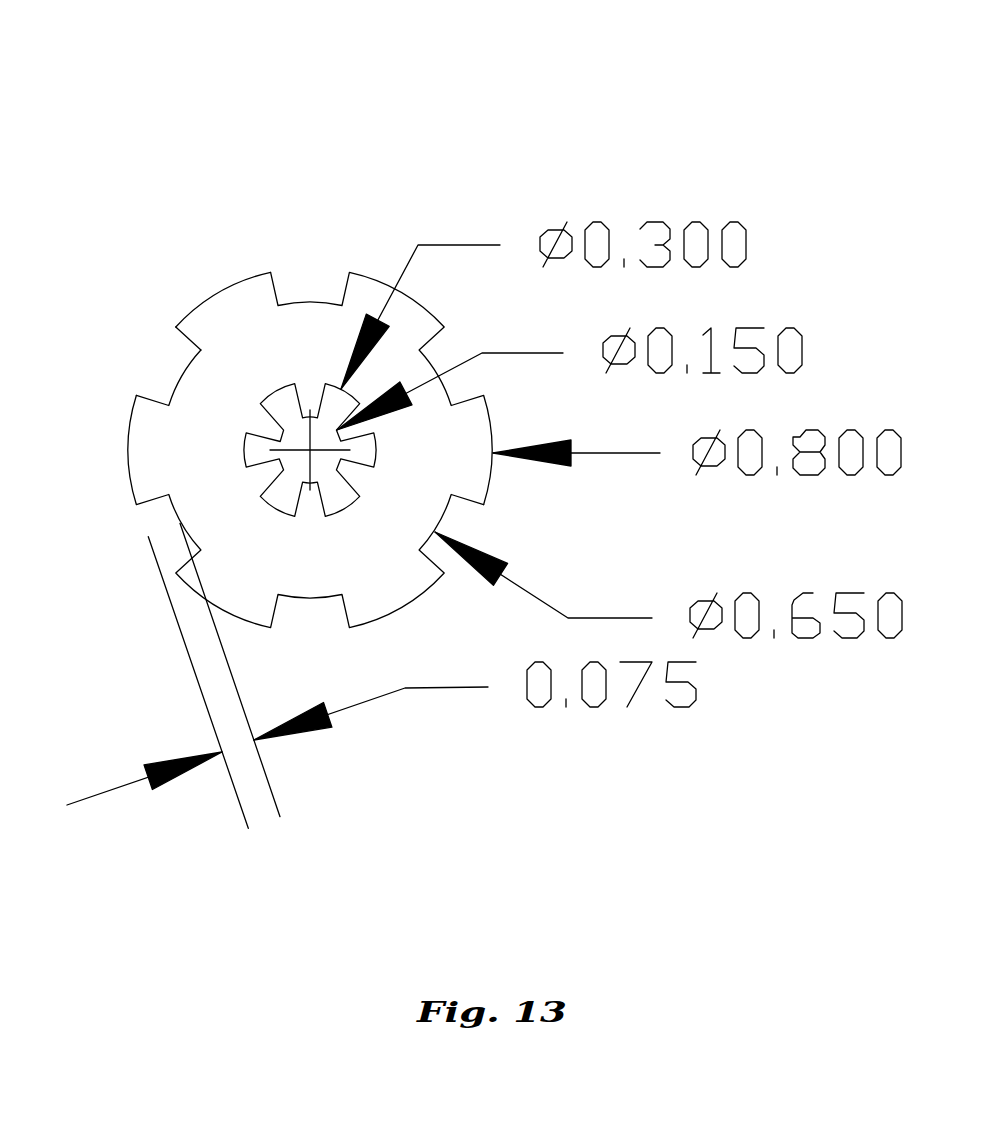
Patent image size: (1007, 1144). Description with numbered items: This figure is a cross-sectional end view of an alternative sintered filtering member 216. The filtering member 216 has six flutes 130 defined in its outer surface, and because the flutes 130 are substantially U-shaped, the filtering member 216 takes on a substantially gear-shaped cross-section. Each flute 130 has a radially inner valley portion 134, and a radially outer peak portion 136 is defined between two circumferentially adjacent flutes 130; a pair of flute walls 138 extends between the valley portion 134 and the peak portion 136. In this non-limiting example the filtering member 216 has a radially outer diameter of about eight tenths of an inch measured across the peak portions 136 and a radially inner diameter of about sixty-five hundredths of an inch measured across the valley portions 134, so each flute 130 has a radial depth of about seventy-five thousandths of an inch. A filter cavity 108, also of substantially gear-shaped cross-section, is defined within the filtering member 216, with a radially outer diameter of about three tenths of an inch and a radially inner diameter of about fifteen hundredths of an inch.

The filtering member 216 is at (182, 97).
The flute 130 is at (308, 268).
The peak portion 136 is at (222, 290).
The flute wall 138 is at (185, 343).
The valley portion 134 is at (175, 375).
The filter cavity 108 is at (263, 450).